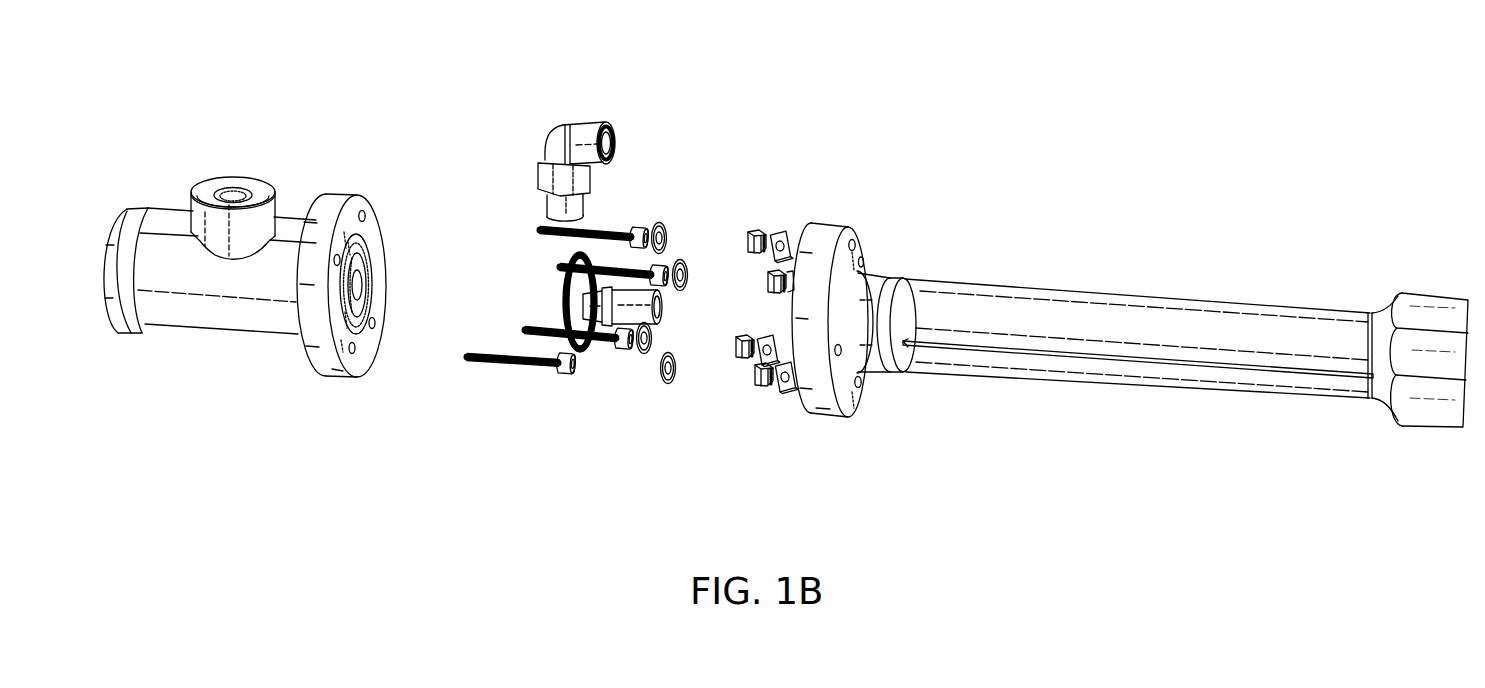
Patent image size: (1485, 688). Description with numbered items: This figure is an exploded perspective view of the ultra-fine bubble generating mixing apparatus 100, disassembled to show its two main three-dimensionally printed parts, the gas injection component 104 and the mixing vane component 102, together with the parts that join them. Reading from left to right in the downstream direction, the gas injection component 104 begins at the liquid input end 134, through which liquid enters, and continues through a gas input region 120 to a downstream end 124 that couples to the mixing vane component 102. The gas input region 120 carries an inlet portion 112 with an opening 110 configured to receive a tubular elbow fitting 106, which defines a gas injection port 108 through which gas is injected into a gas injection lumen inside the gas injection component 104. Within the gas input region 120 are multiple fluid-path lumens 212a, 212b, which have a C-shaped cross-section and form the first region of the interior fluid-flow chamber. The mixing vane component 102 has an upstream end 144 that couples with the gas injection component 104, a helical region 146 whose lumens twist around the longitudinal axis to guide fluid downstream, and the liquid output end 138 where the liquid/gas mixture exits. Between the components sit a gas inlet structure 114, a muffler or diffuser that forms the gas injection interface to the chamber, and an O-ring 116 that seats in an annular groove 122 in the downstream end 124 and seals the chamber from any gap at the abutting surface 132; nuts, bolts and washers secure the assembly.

The mixing apparatus 100 is at (1199, 168).
The mixing vane component 102 is at (962, 270).
The gas injection component 104 is at (144, 198).
The tubular elbow fitting 106 is at (590, 124).
The gas injection port 108 is at (616, 143).
The opening 110 is at (233, 186).
The inlet portion 112 is at (268, 180).
The gas inlet structure 114 is at (660, 318).
The O-ring 116 is at (562, 300).
The gas input region 120 is at (200, 335).
The annular groove 122 is at (366, 248).
The downstream end 124 is at (343, 377).
The abutting surface 132 is at (362, 213).
The liquid input end 134 is at (124, 334).
The liquid output end 138 is at (1426, 428).
The upstream end 144 is at (826, 418).
The helical region 146 is at (1157, 388).
The fluid-path lumen 212a is at (368, 270).
The fluid-path lumen 212b is at (366, 308).